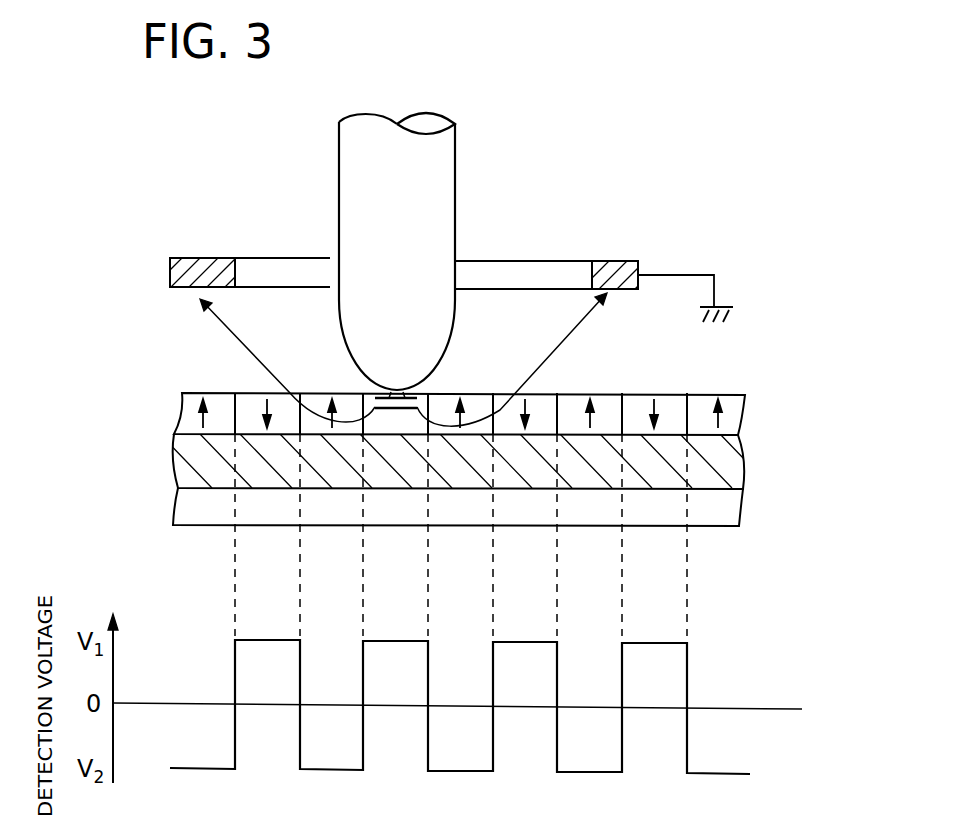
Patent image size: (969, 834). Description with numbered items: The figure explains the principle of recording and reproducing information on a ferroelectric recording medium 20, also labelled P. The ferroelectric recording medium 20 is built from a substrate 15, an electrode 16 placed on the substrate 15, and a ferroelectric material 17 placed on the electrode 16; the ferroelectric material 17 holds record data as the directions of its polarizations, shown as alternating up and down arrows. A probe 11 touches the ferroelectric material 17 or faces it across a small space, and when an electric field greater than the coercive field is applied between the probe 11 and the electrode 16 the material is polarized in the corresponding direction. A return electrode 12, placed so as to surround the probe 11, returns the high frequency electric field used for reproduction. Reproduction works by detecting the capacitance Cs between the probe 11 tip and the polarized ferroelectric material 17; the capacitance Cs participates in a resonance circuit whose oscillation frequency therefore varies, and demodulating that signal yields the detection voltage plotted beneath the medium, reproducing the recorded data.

The probe 11 is at (455, 195).
The return electrode 12 is at (609, 260).
The substrate 15 is at (496, 508).
The electrode 16 is at (745, 462).
The ferroelectric material 17 is at (742, 415).
The ferroelectric recording medium 20 is at (506, 461).
The recording medium P is at (506, 439).
The capacitance Cs is at (420, 401).